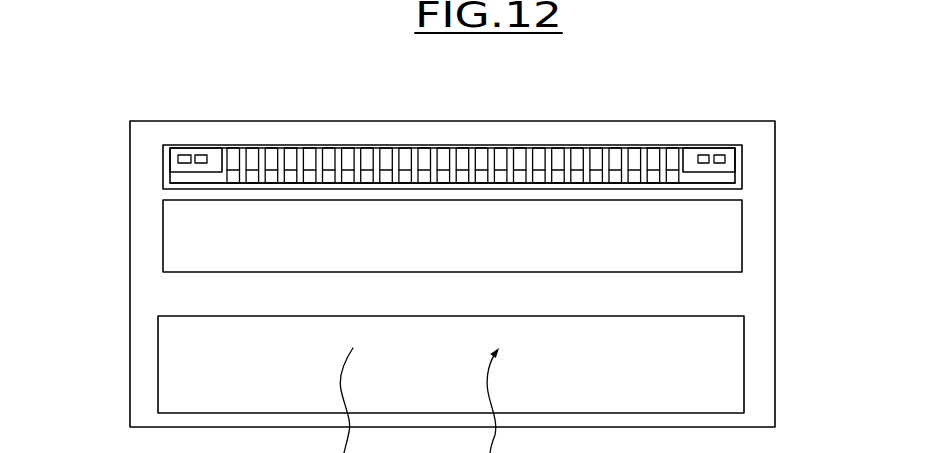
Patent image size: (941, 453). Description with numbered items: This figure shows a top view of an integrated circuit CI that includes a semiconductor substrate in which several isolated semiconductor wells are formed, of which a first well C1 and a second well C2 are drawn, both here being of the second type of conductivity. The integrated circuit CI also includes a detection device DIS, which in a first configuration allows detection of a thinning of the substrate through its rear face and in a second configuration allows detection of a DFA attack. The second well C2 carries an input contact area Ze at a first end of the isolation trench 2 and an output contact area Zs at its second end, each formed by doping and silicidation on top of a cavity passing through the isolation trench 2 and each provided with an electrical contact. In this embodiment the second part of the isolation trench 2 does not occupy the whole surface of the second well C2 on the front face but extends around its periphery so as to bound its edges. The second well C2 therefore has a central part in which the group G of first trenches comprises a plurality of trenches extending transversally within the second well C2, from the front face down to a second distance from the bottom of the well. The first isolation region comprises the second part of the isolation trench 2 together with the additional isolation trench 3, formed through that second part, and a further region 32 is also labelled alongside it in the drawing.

The integrated circuit CI is at (858, 239).
The isolation trench 2 is at (765, 193).
The additional isolation trench 3 is at (739, 173).
The bottom wall of display tray 32 is at (702, 186).
The detection device DIS is at (159, 155).
The input contact area Ze is at (197, 175).
The output contact area Zs is at (733, 160).
The second well C2 is at (272, 157).
The group of first trenches G is at (349, 157).
The first well C1 is at (422, 229).